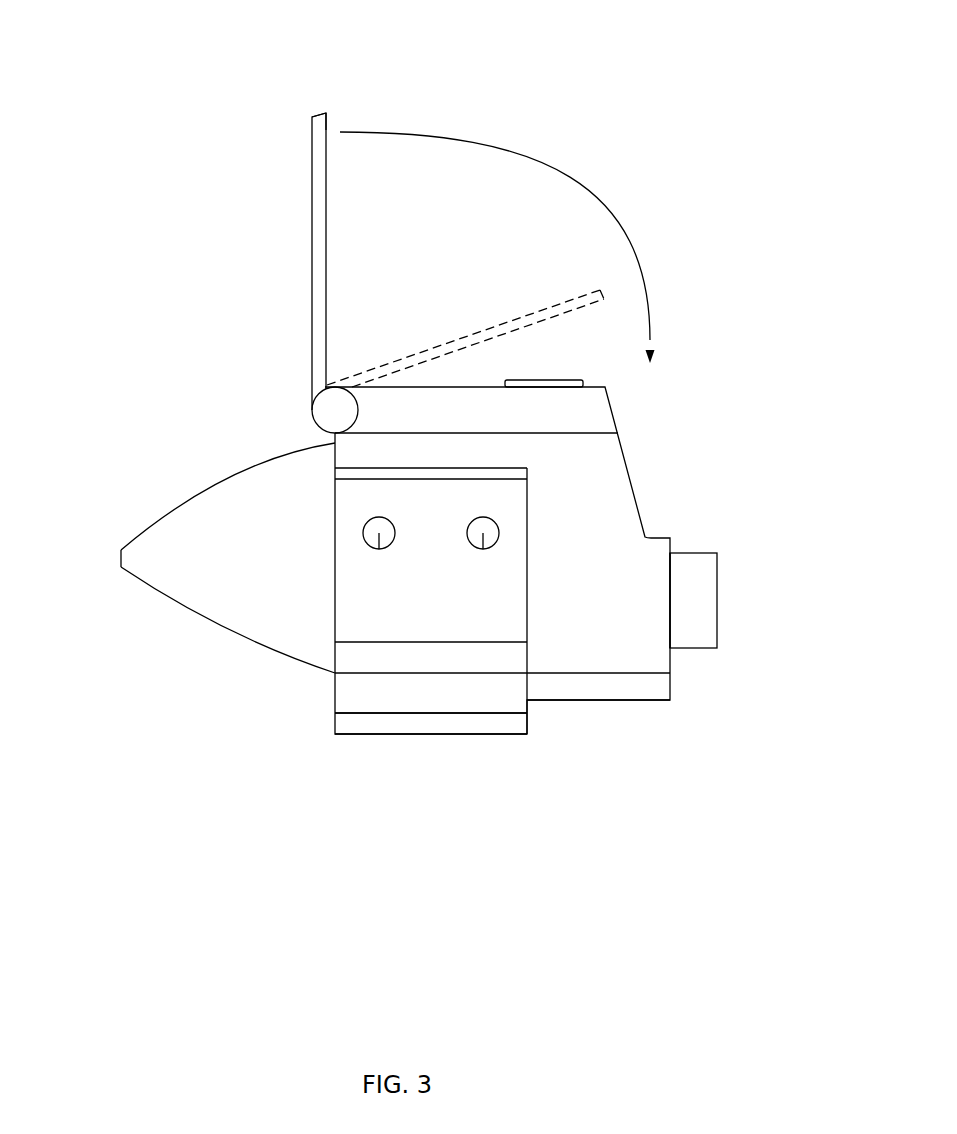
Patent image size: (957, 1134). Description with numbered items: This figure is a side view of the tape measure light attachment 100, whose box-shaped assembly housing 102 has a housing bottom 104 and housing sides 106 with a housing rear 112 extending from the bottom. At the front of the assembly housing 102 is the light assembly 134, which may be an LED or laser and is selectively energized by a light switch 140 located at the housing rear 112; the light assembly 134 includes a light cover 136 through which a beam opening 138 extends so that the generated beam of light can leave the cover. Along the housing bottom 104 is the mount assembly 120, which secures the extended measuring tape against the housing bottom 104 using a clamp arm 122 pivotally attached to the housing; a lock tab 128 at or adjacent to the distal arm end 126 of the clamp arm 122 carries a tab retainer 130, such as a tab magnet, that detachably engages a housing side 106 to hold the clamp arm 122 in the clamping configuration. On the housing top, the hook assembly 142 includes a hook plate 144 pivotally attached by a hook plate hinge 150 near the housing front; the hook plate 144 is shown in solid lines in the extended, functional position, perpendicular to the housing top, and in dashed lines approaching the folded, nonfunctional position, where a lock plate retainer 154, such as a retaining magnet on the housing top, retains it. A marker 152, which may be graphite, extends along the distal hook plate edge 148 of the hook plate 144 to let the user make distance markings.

The tape measure light attachment 100 is at (214, 44).
The assembly housing 102 is at (654, 718).
The housing bottom 104 is at (578, 703).
The housing sides 106 is at (590, 505).
The housing rear 112 is at (670, 610).
The mount assembly 120 is at (434, 755).
The clamp arm 122 is at (357, 736).
The distal arm end 126 is at (480, 722).
The lock tab 128 is at (363, 531).
The tab retainer 130 is at (379, 549).
The light assembly 134 is at (172, 495).
The light cover 136 is at (243, 617).
The beam opening 138 is at (119, 558).
The light switch 140 is at (693, 583).
The hook assembly 142 is at (298, 160).
The hook plate 144 is at (298, 248).
The distal hook plate edge 148 is at (327, 122).
The hook plate hinge 150 is at (335, 409).
The marker 152 is at (312, 117).
The lock plate retainer 154 is at (528, 380).